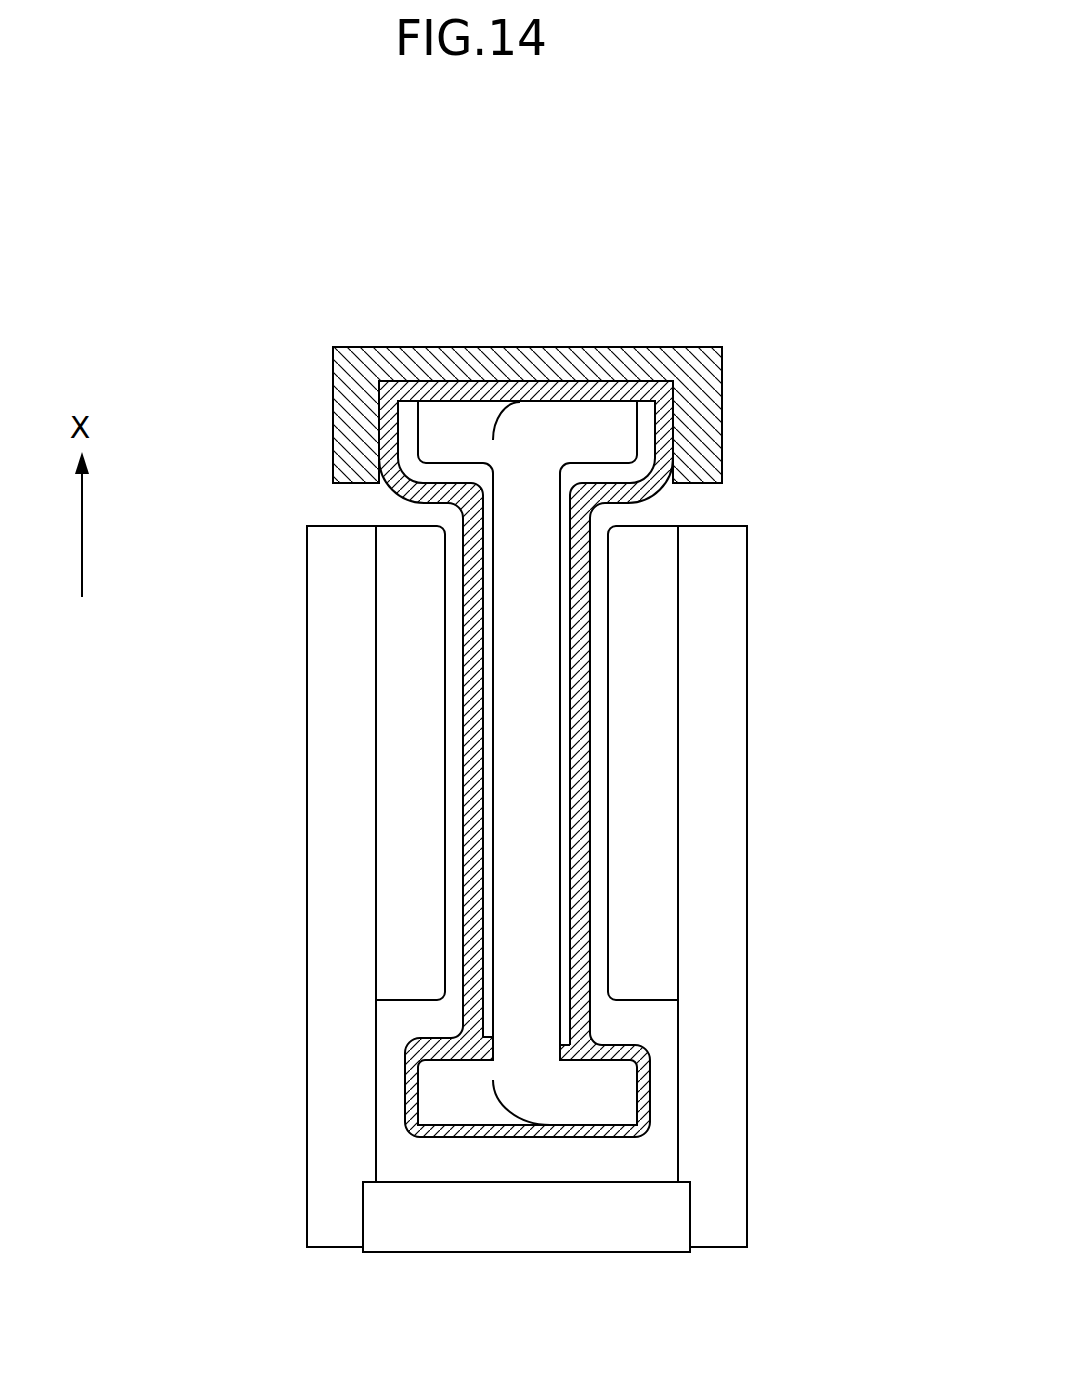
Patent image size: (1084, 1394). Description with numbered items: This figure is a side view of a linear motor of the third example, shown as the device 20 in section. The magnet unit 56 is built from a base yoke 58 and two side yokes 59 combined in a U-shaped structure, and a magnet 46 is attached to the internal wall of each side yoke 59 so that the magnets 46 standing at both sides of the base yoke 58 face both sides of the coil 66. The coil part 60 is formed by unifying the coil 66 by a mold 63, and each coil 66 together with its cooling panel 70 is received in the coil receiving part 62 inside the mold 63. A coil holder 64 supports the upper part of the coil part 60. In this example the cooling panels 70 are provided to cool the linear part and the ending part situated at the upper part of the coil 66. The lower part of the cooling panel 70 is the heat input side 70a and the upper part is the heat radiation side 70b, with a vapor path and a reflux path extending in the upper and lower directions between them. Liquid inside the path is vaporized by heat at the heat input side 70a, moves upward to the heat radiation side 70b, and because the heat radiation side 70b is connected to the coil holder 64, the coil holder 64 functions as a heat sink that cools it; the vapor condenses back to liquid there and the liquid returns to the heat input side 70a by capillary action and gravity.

The linear actuator 20 is at (311, 325).
The magnet 46 is at (396, 673).
The magnet unit 56 is at (698, 1270).
The base yoke 58 is at (475, 1240).
The side yoke 59 is at (340, 1091).
The coil part 60 is at (619, 328).
The coil receiving part 62 is at (449, 572).
The mold 63 is at (586, 638).
The coil holder 64 is at (658, 347).
The coil 66 is at (514, 797).
The cooling panel 70 is at (490, 896).
The heat input side 70a is at (478, 1026).
The heat radiation side 70b is at (378, 438).